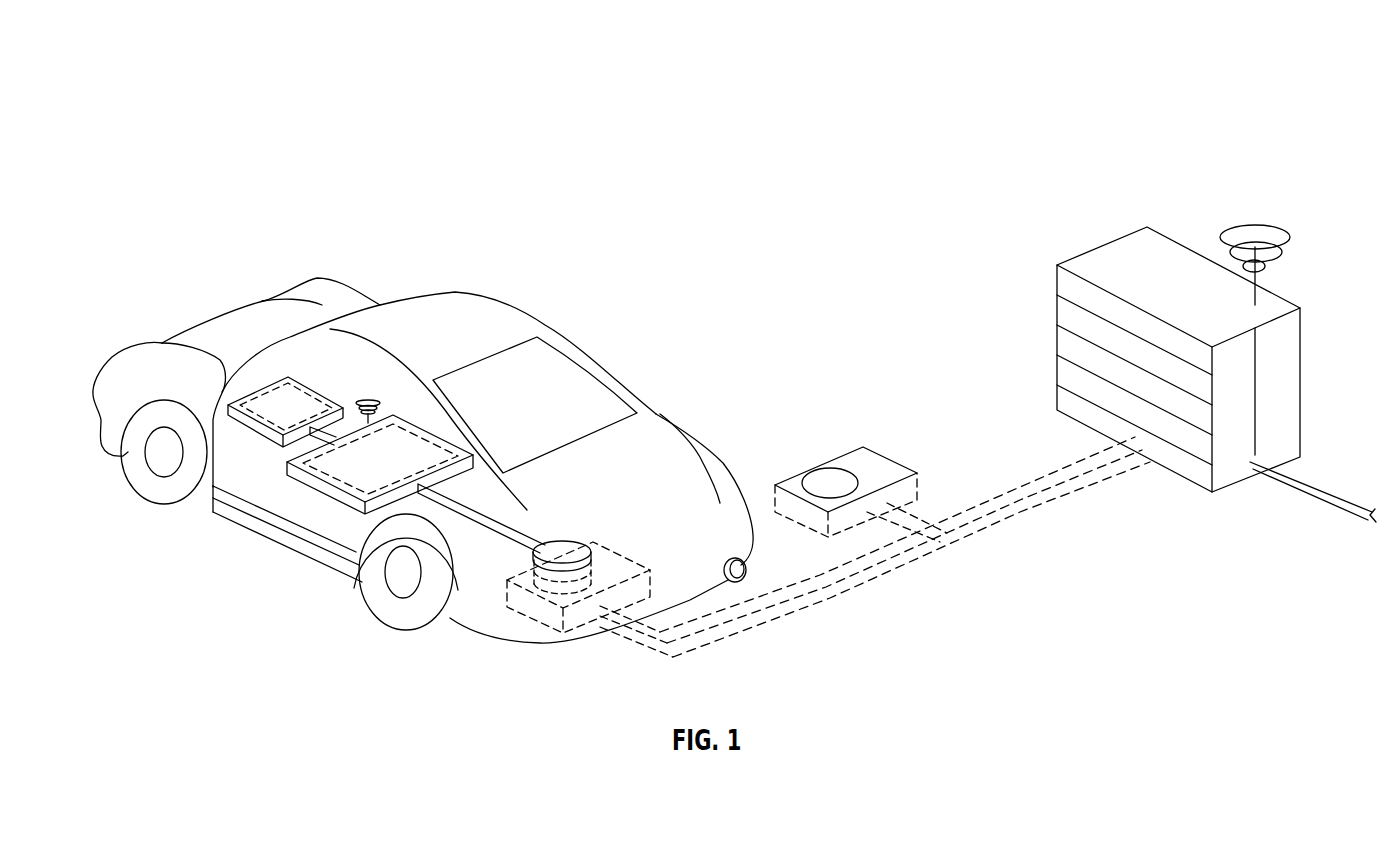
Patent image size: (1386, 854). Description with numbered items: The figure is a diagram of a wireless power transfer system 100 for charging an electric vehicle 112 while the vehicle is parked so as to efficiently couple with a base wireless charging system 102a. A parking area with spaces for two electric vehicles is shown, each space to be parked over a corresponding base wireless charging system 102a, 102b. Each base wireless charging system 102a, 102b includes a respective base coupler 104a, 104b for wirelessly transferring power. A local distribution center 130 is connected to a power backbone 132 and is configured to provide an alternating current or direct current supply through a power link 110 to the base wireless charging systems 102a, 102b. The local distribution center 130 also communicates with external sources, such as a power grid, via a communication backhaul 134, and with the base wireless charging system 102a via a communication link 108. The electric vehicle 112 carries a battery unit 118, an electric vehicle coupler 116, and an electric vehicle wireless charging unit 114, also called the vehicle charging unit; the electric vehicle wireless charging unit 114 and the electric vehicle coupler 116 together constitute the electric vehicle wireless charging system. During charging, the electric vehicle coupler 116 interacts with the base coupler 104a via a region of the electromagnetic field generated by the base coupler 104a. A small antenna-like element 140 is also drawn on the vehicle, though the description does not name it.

The wireless power transfer system 100 is at (364, 140).
The electric vehicle 112 is at (734, 456).
The battery unit 118 is at (246, 398).
The electric vehicle wireless charging unit 114 is at (345, 464).
The vehicle antenna 140 is at (355, 379).
The electric vehicle coupler 116 is at (509, 533).
The base wireless charging system 102a is at (589, 620).
The base coupler 104a is at (600, 574).
The base wireless charging system 102b is at (861, 459).
The base coupler 104b is at (857, 440).
The communication link 108 is at (901, 540).
The power link 110 is at (911, 559).
The local distribution center 130 is at (1158, 357).
The communication backhaul 134 is at (1240, 246).
The power backbone 132 is at (1306, 496).